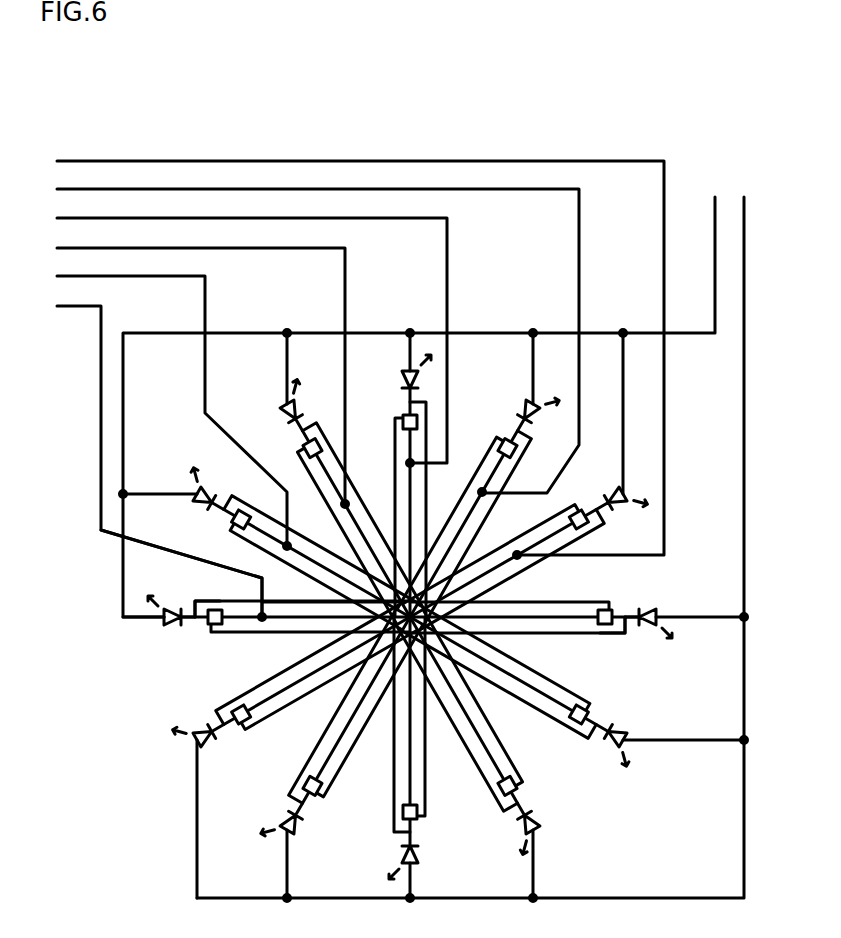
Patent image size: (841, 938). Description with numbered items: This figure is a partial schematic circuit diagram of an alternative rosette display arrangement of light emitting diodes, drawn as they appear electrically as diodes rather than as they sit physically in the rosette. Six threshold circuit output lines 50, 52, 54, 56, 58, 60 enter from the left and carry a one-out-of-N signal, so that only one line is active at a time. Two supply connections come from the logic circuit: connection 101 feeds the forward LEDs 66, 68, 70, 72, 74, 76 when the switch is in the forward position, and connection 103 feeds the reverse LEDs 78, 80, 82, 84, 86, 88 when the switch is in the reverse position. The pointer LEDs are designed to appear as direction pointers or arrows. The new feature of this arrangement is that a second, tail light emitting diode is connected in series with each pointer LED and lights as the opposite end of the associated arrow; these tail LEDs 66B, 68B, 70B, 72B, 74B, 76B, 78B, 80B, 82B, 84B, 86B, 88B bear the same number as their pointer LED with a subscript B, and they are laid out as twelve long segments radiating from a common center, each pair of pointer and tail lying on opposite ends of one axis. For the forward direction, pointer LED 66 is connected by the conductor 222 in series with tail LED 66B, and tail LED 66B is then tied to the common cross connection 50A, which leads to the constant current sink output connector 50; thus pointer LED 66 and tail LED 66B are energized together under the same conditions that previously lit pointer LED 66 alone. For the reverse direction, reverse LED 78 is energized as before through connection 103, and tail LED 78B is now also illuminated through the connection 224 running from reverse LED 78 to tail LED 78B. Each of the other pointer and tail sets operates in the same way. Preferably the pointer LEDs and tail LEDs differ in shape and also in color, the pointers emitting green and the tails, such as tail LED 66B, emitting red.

The constant current sink output connector 50 is at (96, 307).
The threshold circuit output line 52 is at (96, 277).
The threshold circuit output line 54 is at (96, 248).
The threshold circuit output line 56 is at (96, 218).
The threshold circuit output line 58 is at (96, 189).
The threshold circuit output line 60 is at (96, 160).
The common cross connection 50A is at (307, 604).
The connection 101 is at (715, 266).
The connection 103 is at (744, 266).
The conductor 222 is at (217, 599).
The connection 224 is at (602, 641).
The forward LED 66 is at (168, 608).
The forward LED 68 is at (206, 482).
The forward LED 70 is at (296, 404).
The forward LED 72 is at (399, 381).
The forward LED 74 is at (525, 405).
The forward LED 76 is at (612, 487).
The reverse LED 78 is at (645, 610).
The reverse LED 80 is at (618, 734).
The reverse LED 82 is at (548, 823).
The reverse LED 84 is at (399, 855).
The reverse LED 86 is at (282, 816).
The reverse LED 88 is at (199, 728).
The tail LED 66B is at (610, 608).
The tail LED 68B is at (586, 714).
The tail LED 70B is at (521, 785).
The tail LED 72B is at (419, 813).
The tail LED 74B is at (320, 794).
The tail LED 76B is at (240, 722).
The tail LED 78B is at (211, 630).
The tail LED 80B is at (235, 521).
The tail LED 82B is at (306, 444).
The tail LED 84B is at (403, 416).
The tail LED 86B is at (505, 438).
The tail LED 88B is at (580, 517).